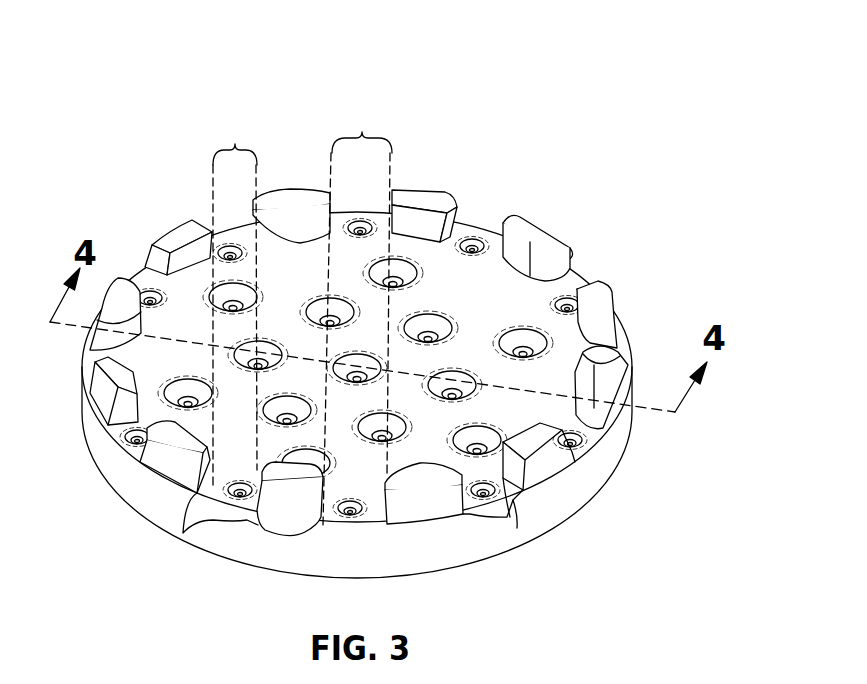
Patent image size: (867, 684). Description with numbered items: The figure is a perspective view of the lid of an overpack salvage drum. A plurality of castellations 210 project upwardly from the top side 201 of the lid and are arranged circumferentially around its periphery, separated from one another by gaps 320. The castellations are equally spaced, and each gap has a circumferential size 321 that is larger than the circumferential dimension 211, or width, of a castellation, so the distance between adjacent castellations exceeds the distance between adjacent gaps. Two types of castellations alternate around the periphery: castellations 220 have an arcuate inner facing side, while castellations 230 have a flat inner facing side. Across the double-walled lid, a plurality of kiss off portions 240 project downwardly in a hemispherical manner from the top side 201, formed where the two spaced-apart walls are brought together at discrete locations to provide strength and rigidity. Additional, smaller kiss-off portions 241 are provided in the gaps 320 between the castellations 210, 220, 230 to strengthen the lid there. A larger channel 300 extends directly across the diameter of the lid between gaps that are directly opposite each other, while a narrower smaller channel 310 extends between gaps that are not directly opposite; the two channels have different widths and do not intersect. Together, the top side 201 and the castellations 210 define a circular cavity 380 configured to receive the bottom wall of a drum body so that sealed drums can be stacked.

The top side 201 is at (279, 262).
The castellations 210 is at (455, 179).
The circumferential dimension 211 is at (140, 463).
The castellation with arcuate inner facing side 220 is at (598, 366).
The castellation with flat inner facing side 230 is at (606, 302).
The kiss off portions 240 is at (262, 352).
The additional kiss-off portions 241 is at (228, 245).
The larger channel 300 is at (357, 319).
The smaller channel 310 is at (235, 305).
The gaps 320 is at (385, 540).
The circumferential size 321 is at (183, 533).
The circular cavity 380 is at (522, 300).